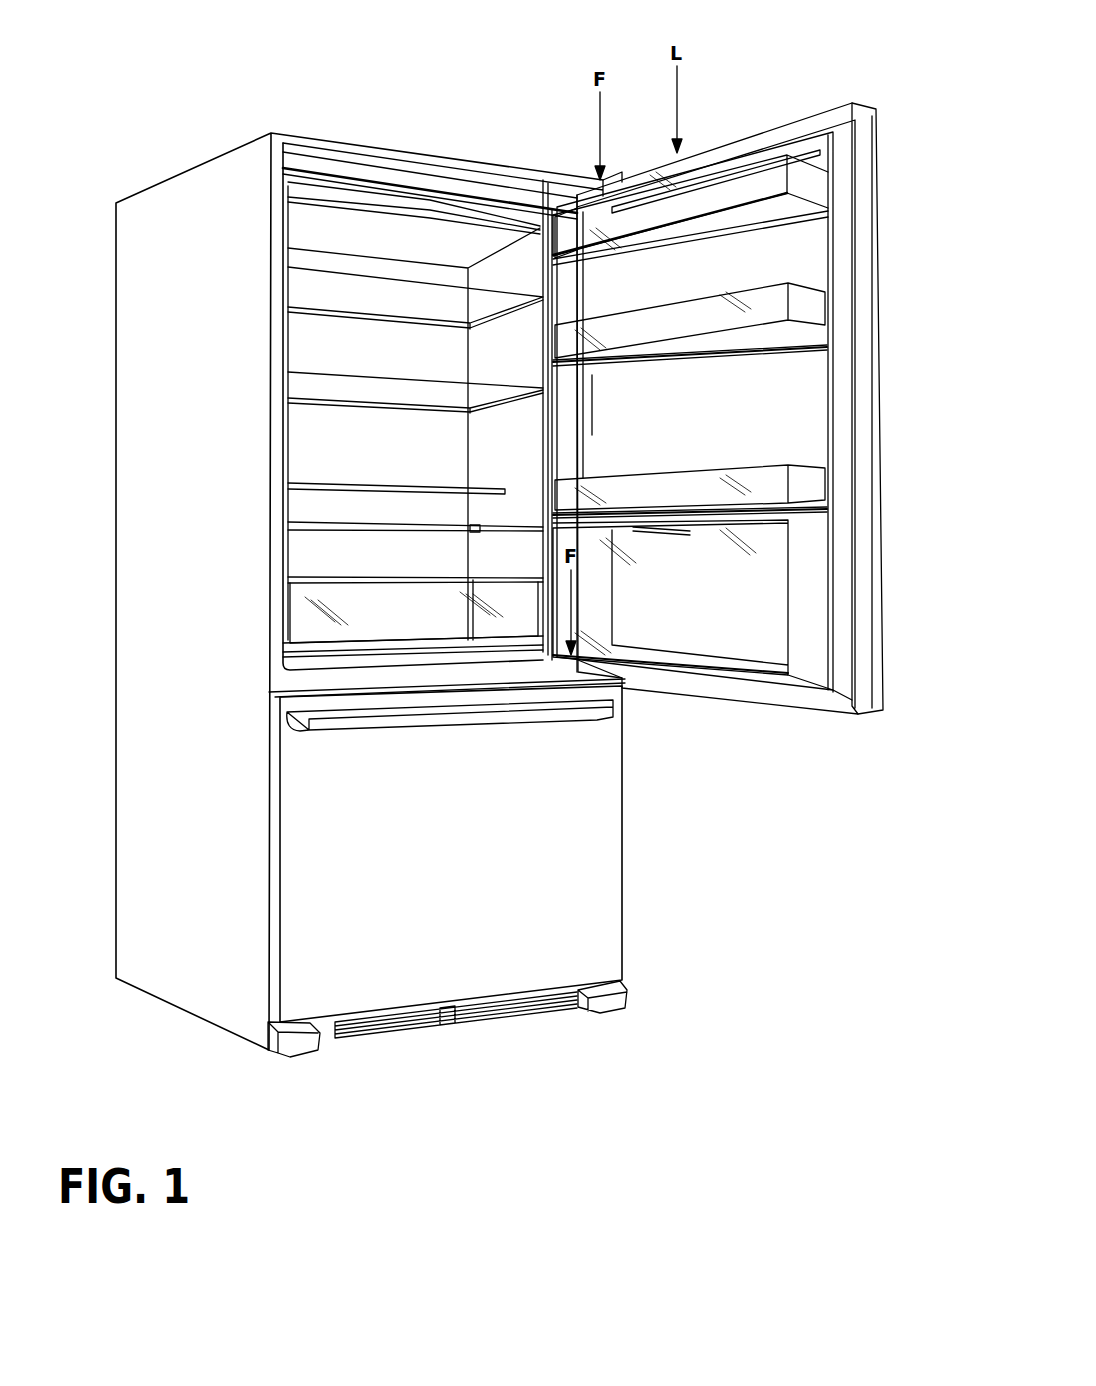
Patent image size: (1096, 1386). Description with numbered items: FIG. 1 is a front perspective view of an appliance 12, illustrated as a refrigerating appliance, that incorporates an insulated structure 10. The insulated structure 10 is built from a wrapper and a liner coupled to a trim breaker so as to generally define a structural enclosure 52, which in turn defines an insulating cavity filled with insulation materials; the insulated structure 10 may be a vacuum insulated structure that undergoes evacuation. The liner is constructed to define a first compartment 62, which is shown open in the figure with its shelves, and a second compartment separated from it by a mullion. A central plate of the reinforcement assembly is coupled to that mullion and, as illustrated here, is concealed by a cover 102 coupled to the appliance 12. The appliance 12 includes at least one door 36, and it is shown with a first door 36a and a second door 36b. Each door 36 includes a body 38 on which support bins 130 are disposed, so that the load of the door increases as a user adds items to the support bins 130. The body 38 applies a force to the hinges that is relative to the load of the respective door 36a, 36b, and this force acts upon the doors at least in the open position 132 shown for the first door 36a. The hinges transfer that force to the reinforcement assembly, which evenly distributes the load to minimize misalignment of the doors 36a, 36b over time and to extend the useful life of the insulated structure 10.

The insulated structure 10 is at (325, 166).
The appliance 12 is at (200, 112).
The structural enclosure 52 is at (300, 162).
The open position 132 is at (545, 262).
The door 36 is at (712, 130).
The first door 36a is at (768, 423).
The second door 36b is at (343, 805).
The body 38 is at (788, 260).
The first compartment 62 is at (333, 447).
The cover 102 is at (333, 682).
The support bins 130 is at (775, 486).